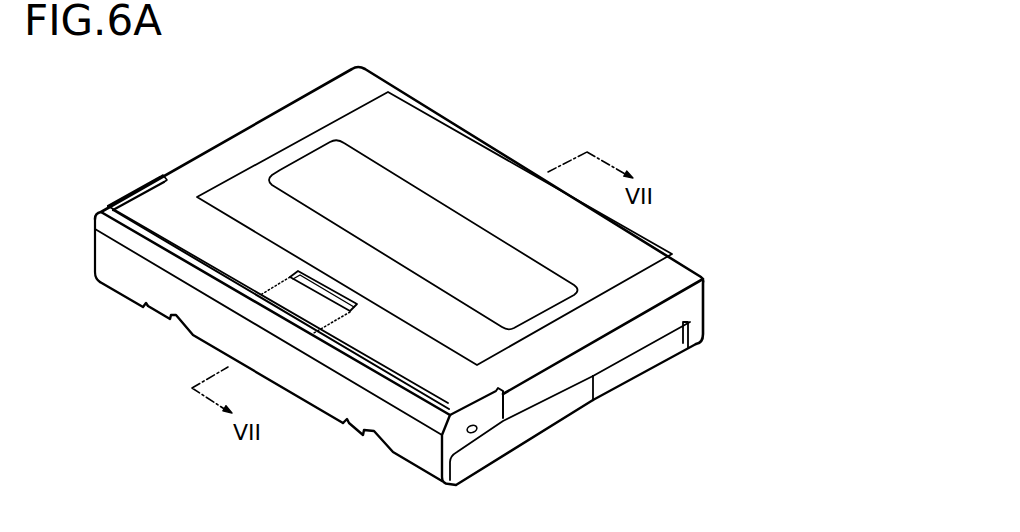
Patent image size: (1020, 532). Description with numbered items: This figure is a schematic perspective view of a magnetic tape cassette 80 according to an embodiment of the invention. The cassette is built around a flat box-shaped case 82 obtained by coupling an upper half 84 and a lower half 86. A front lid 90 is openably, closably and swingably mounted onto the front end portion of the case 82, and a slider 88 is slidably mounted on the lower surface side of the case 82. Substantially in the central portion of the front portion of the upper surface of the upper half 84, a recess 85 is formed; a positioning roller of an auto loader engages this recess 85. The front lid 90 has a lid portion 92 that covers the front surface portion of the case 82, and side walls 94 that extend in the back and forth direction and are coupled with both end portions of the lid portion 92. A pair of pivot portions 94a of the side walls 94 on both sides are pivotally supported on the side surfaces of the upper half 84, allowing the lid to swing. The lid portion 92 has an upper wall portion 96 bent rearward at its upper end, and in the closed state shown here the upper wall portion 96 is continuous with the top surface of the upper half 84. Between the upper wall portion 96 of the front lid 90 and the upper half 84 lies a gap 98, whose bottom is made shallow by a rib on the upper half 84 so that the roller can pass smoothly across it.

The magnetic tape cassette 80 is at (538, 114).
The case 82 is at (653, 243).
The upper half 84 is at (273, 137).
The recess 85 is at (312, 283).
The lower half 86 is at (662, 345).
The slider 88 is at (565, 405).
The front lid 90 is at (217, 328).
The lid portion 92 is at (337, 418).
The side walls 94 is at (122, 197).
The pivot portions 94a is at (476, 432).
The upper wall portion 96 is at (157, 243).
The gap 98 is at (198, 258).